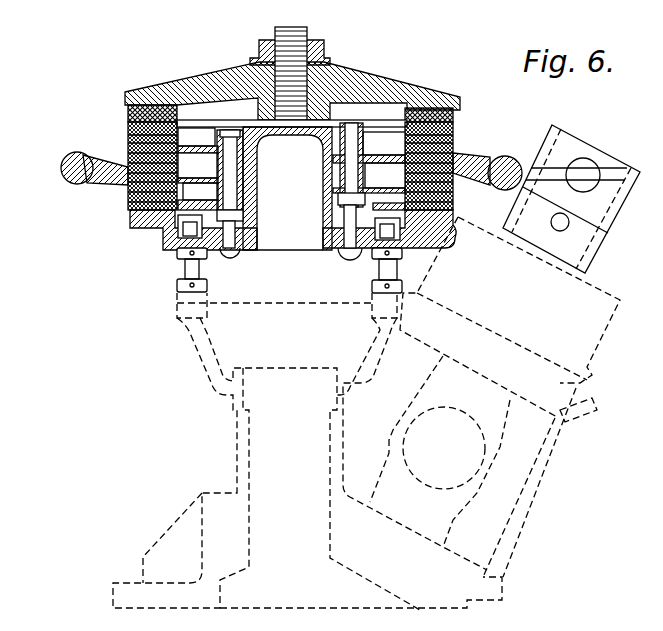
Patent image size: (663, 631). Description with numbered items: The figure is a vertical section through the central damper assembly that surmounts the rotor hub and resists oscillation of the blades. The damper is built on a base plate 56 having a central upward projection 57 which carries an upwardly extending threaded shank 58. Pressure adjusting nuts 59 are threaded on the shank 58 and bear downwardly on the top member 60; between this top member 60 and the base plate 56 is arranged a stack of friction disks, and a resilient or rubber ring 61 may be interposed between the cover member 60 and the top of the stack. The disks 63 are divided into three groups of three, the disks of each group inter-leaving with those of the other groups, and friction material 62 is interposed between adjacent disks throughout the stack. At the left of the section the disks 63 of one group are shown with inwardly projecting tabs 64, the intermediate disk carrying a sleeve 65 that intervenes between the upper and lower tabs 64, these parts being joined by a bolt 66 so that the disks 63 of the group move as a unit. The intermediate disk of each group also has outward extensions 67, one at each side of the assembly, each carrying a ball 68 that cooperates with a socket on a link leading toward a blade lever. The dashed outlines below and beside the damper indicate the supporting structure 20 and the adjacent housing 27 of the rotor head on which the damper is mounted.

The housing 20 is at (237, 447).
The valve housing 27 is at (603, 339).
The base plate 56 is at (175, 242).
The central upward projection 57 is at (257, 172).
The threaded shank 58 is at (307, 28).
The pressure adjusting nuts 59 is at (322, 53).
The top member 60 is at (373, 83).
The resilient ring 61 is at (152, 96).
The friction material 62 is at (128, 123).
The disks 63 is at (128, 148).
The tabs 64 is at (291, 164).
The sleeve 65 is at (217, 167).
The bolt 66 is at (229, 190).
The outward extensions 67 is at (97, 182).
The ball 68 is at (63, 162).